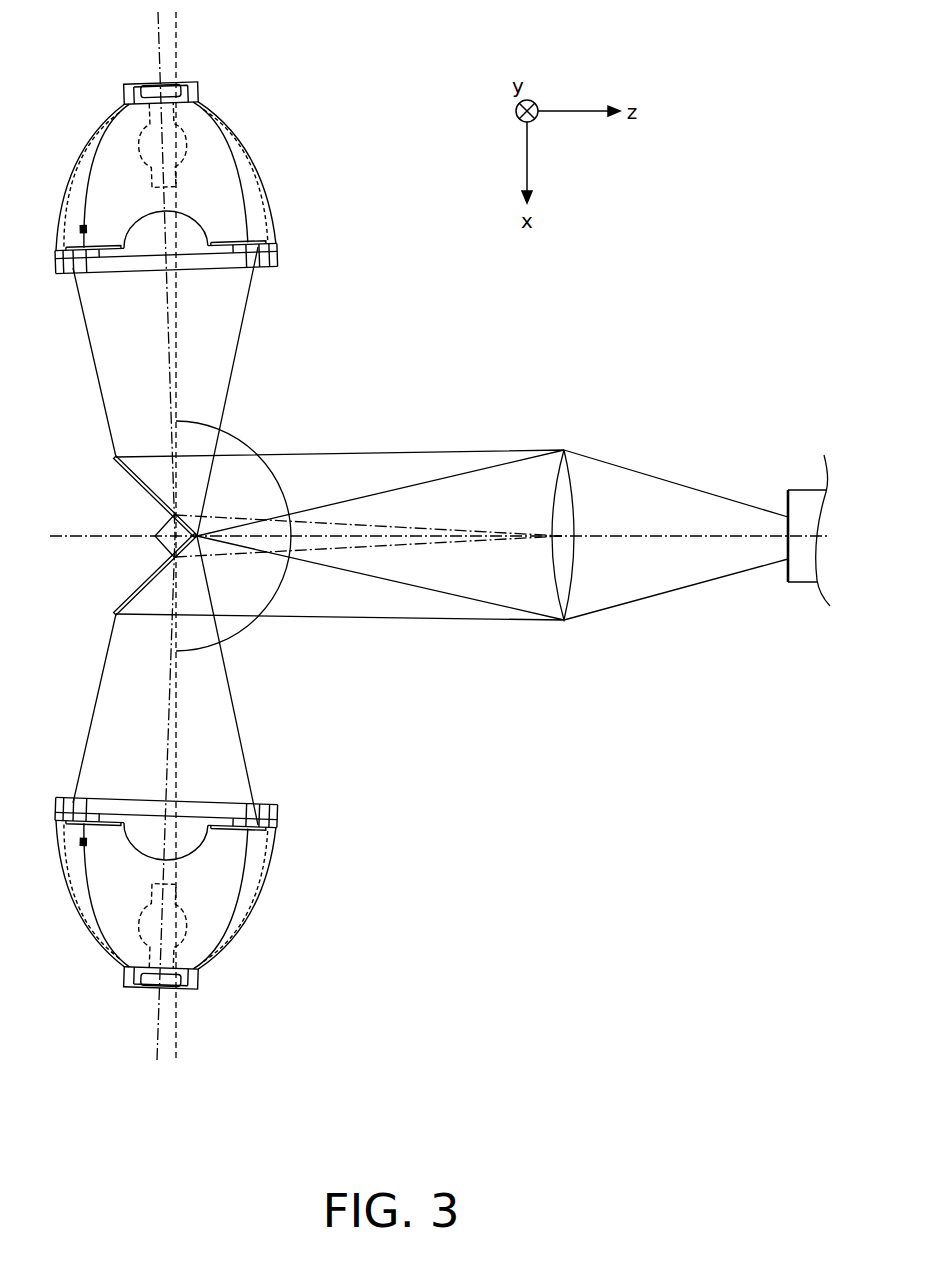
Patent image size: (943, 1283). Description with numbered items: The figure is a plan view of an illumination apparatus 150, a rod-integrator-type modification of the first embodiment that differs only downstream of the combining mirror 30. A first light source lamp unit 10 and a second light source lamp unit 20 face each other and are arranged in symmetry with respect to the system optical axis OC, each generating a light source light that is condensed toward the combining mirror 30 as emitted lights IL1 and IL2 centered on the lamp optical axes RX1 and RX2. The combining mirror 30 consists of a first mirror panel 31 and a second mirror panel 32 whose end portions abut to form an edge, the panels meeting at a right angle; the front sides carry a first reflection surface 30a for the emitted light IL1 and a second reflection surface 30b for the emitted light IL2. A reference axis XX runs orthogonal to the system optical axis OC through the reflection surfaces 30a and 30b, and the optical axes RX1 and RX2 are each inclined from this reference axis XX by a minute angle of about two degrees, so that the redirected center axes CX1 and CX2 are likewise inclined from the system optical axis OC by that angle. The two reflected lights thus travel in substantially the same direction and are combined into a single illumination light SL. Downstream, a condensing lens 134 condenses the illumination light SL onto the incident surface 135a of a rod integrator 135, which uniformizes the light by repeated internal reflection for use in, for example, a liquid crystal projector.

The first light source lamp unit 10 is at (297, 193).
The second light source lamp unit 20 is at (293, 902).
The combining mirror 30 is at (114, 538).
The first reflection surface 30a is at (115, 465).
The second reflection surface 30b is at (124, 610).
The first mirror panel 31 is at (153, 482).
The second mirror panel 32 is at (156, 586).
The condensing lens 134 is at (563, 449).
The rod integrator 135 is at (769, 529).
The incident surface 135a is at (787, 542).
The illumination apparatus 150 is at (683, 22).
The reference axis XX is at (177, 280).
The optical axis of the first light source lamp unit RX1 is at (168, 313).
The optical axis of the second light source lamp unit RX2 is at (168, 740).
The emitted light IL1 is at (252, 295).
The emitted light IL2 is at (235, 705).
The system optical axis OC is at (338, 532).
The center axis CX1 is at (410, 527).
The center axis CX2 is at (343, 549).
The illumination light SL is at (442, 634).